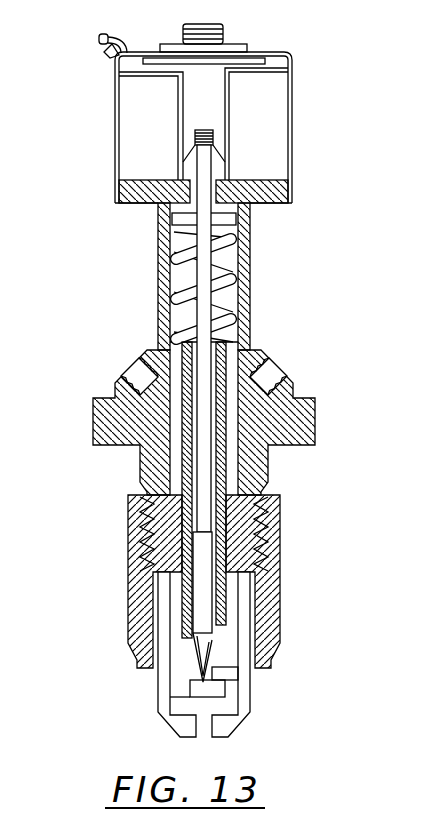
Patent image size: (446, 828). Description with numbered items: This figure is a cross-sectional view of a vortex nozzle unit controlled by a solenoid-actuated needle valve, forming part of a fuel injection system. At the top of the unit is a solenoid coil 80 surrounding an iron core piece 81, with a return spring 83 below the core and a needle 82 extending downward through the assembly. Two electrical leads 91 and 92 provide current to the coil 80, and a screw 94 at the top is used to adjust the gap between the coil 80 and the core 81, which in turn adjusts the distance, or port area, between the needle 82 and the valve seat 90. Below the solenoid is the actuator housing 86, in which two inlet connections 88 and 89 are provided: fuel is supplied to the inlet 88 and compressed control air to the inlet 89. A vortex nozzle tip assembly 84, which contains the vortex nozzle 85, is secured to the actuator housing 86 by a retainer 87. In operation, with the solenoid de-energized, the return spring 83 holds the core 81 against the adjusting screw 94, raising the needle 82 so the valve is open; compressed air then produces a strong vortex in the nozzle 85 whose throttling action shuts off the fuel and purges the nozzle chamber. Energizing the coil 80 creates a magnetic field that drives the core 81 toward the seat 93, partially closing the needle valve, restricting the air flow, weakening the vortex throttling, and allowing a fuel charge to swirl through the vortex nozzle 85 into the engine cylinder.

The solenoid coil 80 is at (257, 131).
The iron core piece 81 is at (200, 103).
The needle 82 is at (257, 660).
The return spring 83 is at (231, 238).
The vortex nozzle tip assembly 84 is at (224, 670).
The vortex nozzle 85 is at (205, 715).
The actuator housing 86 is at (298, 420).
The retainer 87 is at (280, 585).
The inlet connection 88 is at (142, 378).
The inlet connection 89 is at (267, 373).
The valve seat 90 is at (197, 668).
The electrical lead 91 is at (103, 57).
The electrical lead 92 is at (98, 33).
The seat 93 is at (265, 66).
The screw 94 is at (200, 23).